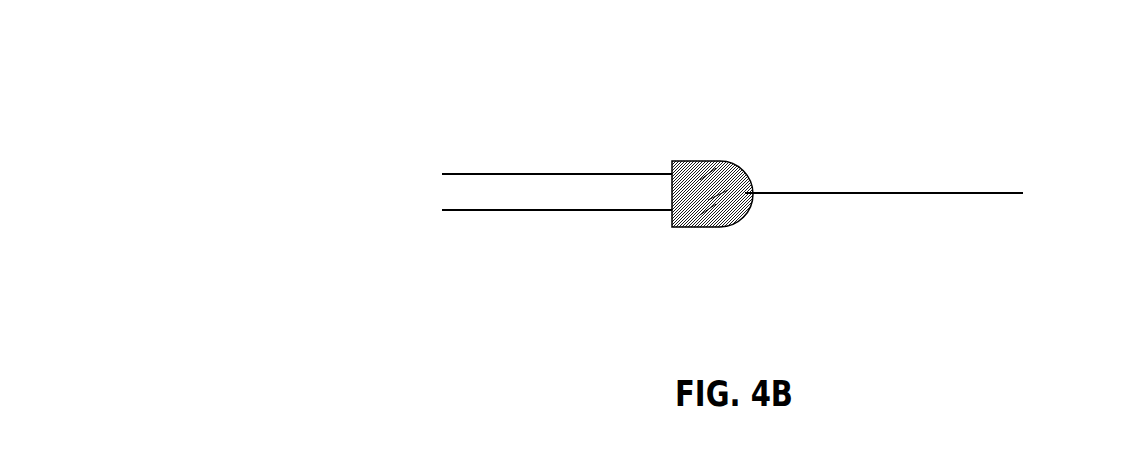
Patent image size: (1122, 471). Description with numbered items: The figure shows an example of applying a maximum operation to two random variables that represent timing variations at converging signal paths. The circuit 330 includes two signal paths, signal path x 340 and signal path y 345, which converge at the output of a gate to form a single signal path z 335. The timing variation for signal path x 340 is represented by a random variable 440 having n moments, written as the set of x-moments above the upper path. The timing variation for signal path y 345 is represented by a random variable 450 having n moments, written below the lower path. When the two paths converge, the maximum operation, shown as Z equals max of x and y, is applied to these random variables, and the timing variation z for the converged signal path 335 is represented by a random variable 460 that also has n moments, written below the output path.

The circuit 330 is at (347, 101).
The signal path x 340 is at (443, 173).
The signal path y 345 is at (443, 210).
The signal path z 335 is at (1011, 194).
The random variable 440 is at (562, 125).
The random variable 450 is at (533, 260).
The random variable 460 is at (863, 247).